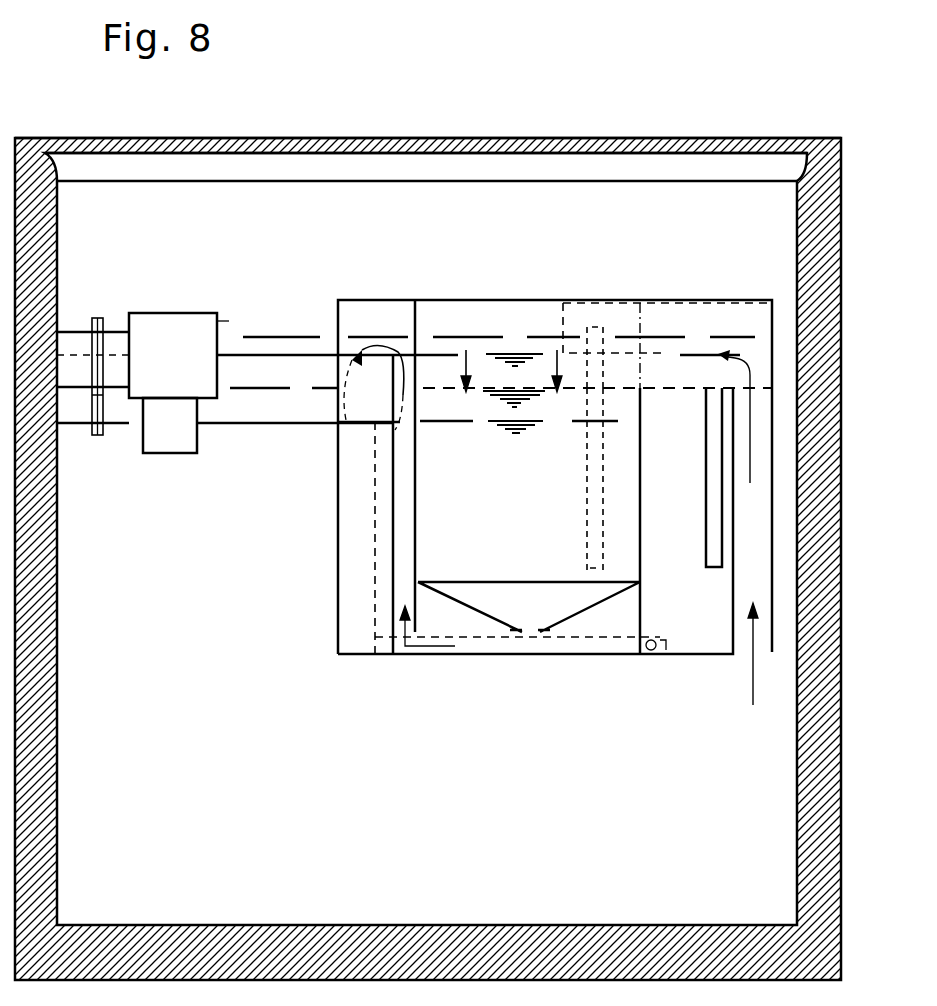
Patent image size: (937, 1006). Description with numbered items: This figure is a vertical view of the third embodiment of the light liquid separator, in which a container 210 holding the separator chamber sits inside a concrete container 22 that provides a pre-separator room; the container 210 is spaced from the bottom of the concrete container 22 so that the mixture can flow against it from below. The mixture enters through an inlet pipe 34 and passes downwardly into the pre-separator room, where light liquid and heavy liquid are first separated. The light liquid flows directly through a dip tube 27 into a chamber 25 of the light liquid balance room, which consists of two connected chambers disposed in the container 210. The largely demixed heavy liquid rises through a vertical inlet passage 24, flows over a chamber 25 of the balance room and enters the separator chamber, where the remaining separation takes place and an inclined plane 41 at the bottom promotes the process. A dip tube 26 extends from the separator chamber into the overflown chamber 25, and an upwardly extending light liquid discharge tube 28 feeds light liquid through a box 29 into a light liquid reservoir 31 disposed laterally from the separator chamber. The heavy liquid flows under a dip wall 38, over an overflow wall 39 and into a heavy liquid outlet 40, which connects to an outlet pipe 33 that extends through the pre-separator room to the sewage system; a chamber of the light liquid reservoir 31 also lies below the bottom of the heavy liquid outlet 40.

The concrete container 22 is at (517, 146).
The vertical inlet passage 24 is at (742, 640).
The light liquid balance room chamber 25 is at (682, 495).
The dip tube 26 is at (706, 530).
The dip tube 27 is at (588, 510).
The light liquid discharge tube 28 is at (605, 335).
The box 29 is at (558, 312).
The light liquid reservoir 31 is at (477, 305).
The outlet pipe 33 is at (268, 416).
The inlet pipe 34 is at (82, 338).
The dip wall 38 is at (415, 518).
The overflow wall 39 is at (393, 482).
The heavy liquid outlet 40 is at (348, 440).
The inclined plane 41 is at (598, 607).
The container 210 is at (500, 656).